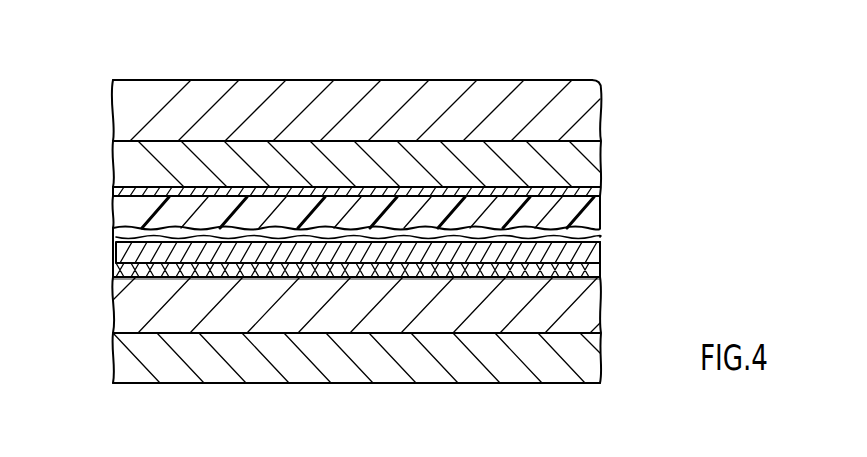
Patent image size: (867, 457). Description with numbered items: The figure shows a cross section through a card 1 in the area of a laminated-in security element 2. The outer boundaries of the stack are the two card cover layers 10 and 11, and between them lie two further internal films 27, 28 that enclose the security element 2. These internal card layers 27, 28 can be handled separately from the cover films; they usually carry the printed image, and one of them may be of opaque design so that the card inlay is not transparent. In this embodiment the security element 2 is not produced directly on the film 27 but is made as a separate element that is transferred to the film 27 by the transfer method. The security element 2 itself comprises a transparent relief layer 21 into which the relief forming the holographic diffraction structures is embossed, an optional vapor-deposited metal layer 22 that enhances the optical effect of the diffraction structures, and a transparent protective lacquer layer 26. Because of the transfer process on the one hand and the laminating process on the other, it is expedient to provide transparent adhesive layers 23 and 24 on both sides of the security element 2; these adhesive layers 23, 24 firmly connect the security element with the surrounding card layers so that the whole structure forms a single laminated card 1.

The card 1 is at (356, 218).
The security element 2 is at (356, 253).
The card cover layer 10 is at (133, 107).
The card cover layer 11 is at (137, 368).
The transparent relief layer 21 is at (118, 204).
The vapor-deposited metal layer 22 is at (122, 241).
The adhesive layer 23 is at (135, 305).
The adhesive layer 24 is at (122, 193).
The transparent protective lacquer layer 26 is at (117, 262).
The film 27 is at (135, 165).
The film 28 is at (114, 310).